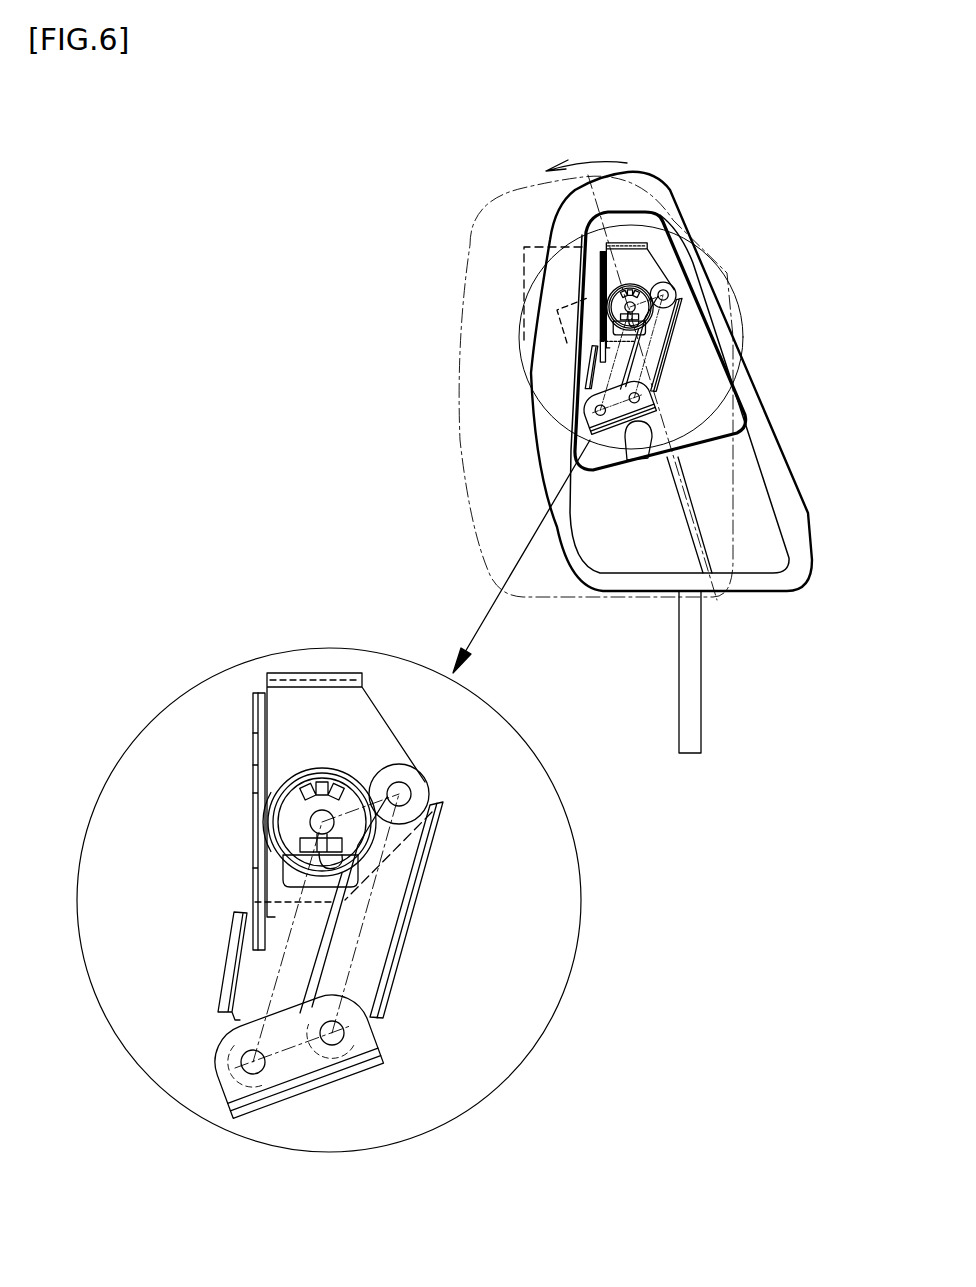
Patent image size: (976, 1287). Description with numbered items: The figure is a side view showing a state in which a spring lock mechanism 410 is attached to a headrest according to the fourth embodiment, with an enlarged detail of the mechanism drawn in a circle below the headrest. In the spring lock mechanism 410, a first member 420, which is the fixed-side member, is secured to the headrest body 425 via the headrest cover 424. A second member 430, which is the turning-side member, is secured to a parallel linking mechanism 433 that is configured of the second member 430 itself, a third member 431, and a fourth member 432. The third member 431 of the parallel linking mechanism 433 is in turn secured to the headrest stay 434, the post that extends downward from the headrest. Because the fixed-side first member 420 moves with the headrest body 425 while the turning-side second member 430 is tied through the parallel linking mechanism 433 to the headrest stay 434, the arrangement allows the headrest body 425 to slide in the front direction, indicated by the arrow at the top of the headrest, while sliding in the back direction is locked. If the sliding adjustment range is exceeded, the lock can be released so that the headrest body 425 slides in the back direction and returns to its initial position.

The spring lock mechanism 410 is at (463, 890).
The first member 420 is at (297, 720).
The headrest cover 424 is at (675, 298).
The headrest body 425 is at (553, 288).
The second member 430 is at (243, 977).
The third member 431 is at (348, 1080).
The fourth member 432 is at (374, 931).
The parallel linking mechanism 433 is at (455, 788).
The headrest stay 434 is at (657, 394).